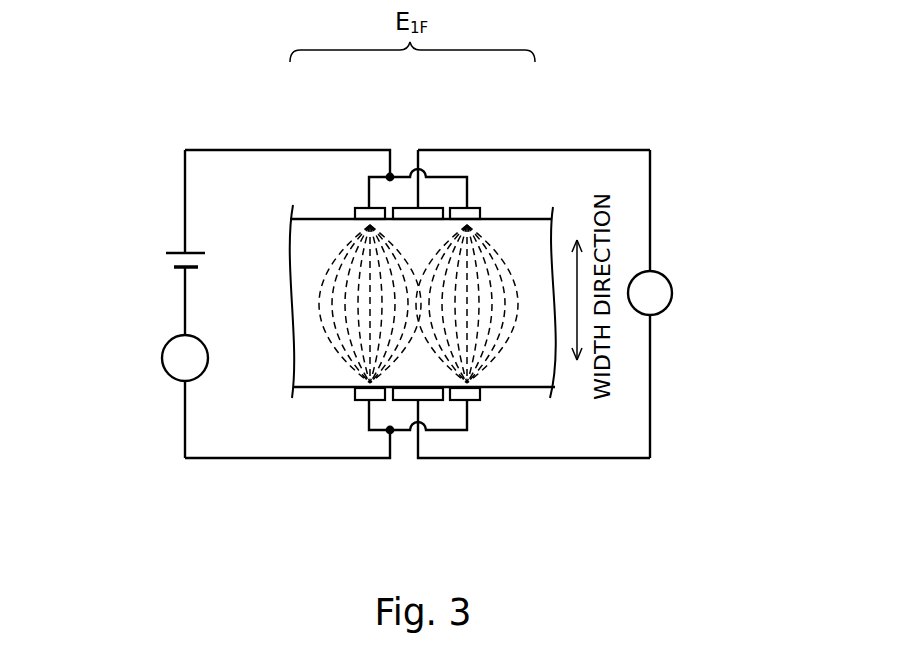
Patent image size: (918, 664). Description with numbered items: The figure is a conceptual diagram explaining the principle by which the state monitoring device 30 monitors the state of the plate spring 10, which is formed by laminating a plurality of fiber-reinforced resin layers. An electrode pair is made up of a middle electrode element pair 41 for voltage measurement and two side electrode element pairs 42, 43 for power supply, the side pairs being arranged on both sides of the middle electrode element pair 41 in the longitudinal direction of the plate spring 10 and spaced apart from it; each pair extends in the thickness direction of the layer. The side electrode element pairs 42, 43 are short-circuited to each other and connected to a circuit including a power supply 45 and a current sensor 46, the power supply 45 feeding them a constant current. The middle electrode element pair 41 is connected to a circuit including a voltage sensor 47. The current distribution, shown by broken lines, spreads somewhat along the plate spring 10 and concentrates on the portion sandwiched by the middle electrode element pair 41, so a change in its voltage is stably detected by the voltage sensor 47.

The state monitoring device 30 is at (628, 110).
The plate spring 10 is at (514, 219).
The middle electrode element pair 41 is at (405, 205).
The side electrode element pair 42 is at (362, 205).
The side electrode element pair 43 is at (472, 205).
The power supply 45 is at (160, 258).
The current sensor 46 is at (162, 351).
The voltage sensor 47 is at (673, 292).